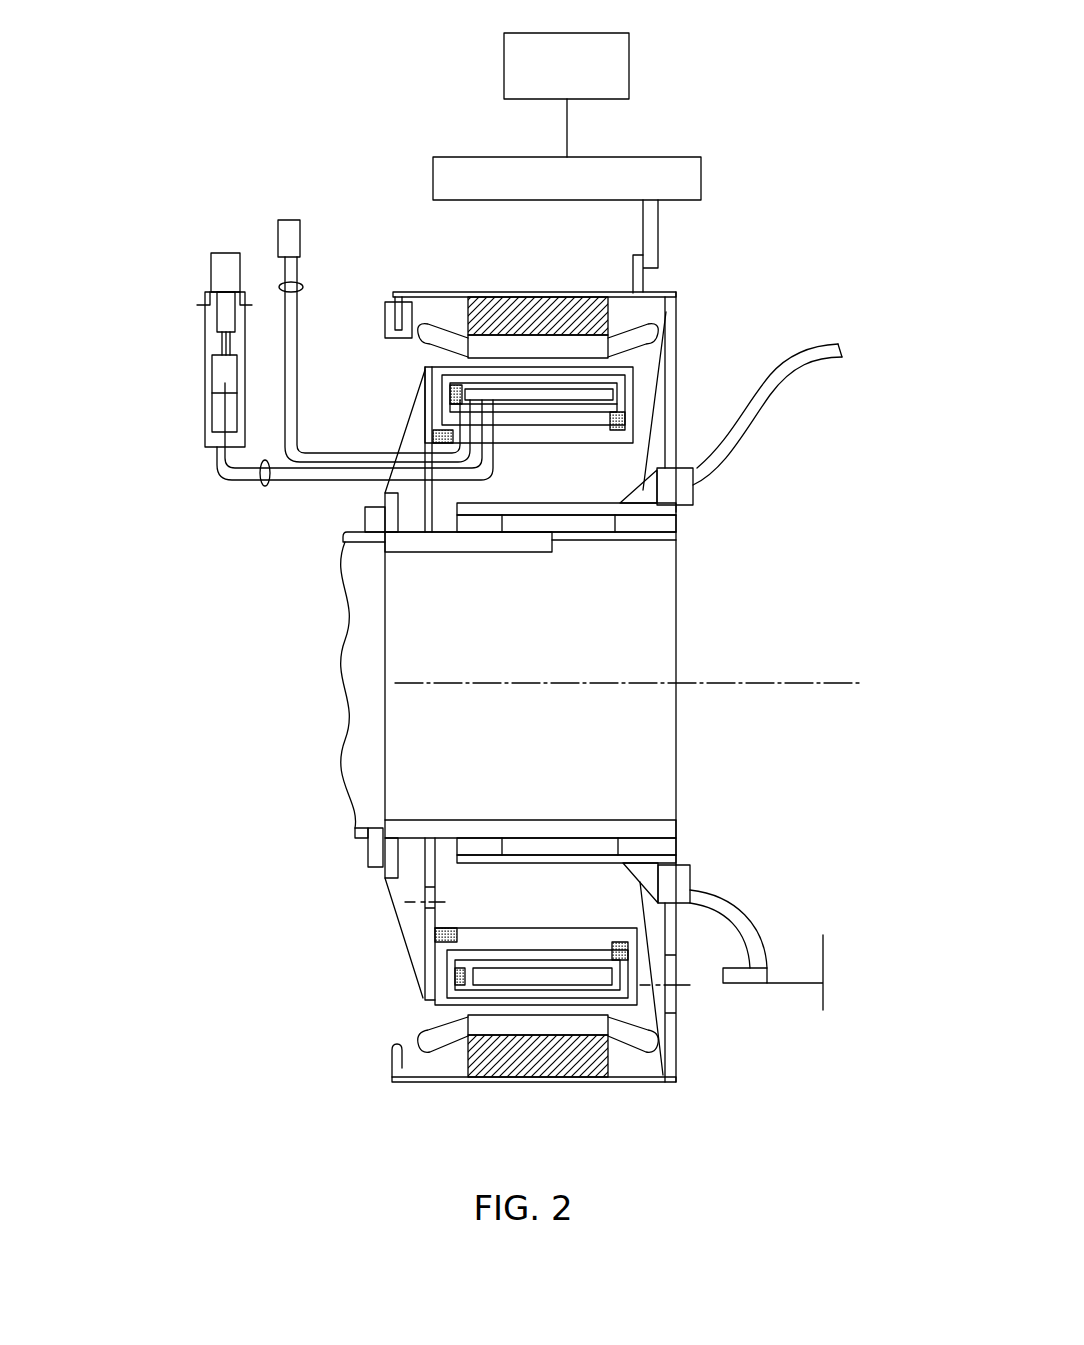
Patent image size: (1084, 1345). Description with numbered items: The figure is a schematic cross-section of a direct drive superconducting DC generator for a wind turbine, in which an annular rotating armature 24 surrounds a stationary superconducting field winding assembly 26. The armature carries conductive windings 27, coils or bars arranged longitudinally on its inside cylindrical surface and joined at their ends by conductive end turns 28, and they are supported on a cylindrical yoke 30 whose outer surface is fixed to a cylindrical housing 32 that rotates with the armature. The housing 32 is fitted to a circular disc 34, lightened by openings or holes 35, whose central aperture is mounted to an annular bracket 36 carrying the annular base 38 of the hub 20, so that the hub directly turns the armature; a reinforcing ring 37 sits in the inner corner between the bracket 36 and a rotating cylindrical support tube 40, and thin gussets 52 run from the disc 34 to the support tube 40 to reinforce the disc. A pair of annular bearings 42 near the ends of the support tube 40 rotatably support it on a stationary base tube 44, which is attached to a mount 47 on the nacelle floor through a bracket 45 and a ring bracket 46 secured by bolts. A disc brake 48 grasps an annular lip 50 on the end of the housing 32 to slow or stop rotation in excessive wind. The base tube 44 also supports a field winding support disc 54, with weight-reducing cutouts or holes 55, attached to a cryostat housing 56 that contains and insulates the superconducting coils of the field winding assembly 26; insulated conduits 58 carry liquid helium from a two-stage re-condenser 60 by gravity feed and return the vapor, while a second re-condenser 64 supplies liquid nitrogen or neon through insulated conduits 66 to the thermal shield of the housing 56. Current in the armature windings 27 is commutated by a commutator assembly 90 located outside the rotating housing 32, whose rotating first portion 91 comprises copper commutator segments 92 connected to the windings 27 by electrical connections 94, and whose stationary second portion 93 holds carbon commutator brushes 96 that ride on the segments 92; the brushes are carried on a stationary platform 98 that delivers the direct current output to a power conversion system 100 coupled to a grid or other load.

The hub 20 is at (812, 363).
The annular rotating armature 24 is at (458, 314).
The stationary superconducting field winding assembly 26 is at (616, 386).
The conductive windings 27 is at (513, 347).
The conductive end turns 28 is at (420, 343).
The cylindrical yoke 30 is at (558, 330).
The cylindrical housing 32 is at (617, 290).
The circular disc 34 is at (677, 380).
The openings or holes 35 is at (672, 998).
The annular bracket 36 is at (665, 500).
The reinforcing ring 37 is at (633, 492).
The annular base 38 is at (682, 493).
The rotating cylindrical support tube 40 is at (555, 512).
The annular bearings 42 is at (477, 525).
The stationary base tube 44 is at (432, 543).
The bracket 45 is at (390, 857).
The ring bracket 46 is at (373, 828).
The mount 47 is at (345, 625).
The disc brake 48 is at (385, 323).
The annular lip 50 is at (397, 305).
The gussets 52 is at (405, 423).
The field winding support disc 54 is at (430, 853).
The cutouts or holes 55 is at (422, 908).
The cryostat housing 56 is at (633, 405).
The insulated conduits 58 is at (265, 487).
The two-stage re-condenser 60 is at (205, 403).
The second re-condenser 64 is at (278, 235).
The insulated conduits 66 is at (303, 288).
The commutator assembly 90 is at (770, 208).
The rotating first portion 91 is at (643, 258).
The commutator segments 92 is at (647, 283).
The stationary second portion 93 is at (653, 222).
The electrical connections 94 is at (632, 313).
The commutator brushes 96 is at (658, 250).
The stationary platform 98 is at (701, 176).
The power conversion system 100 is at (630, 63).